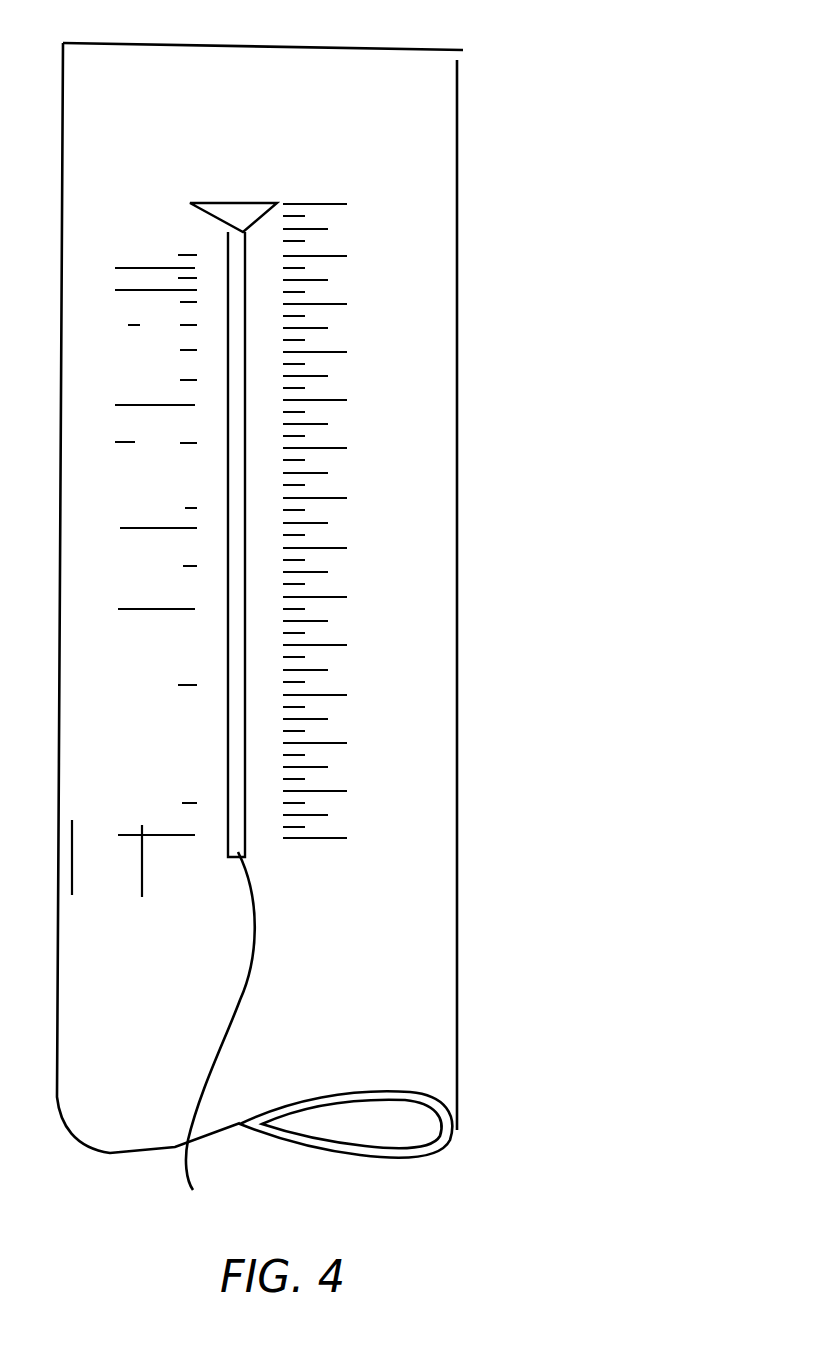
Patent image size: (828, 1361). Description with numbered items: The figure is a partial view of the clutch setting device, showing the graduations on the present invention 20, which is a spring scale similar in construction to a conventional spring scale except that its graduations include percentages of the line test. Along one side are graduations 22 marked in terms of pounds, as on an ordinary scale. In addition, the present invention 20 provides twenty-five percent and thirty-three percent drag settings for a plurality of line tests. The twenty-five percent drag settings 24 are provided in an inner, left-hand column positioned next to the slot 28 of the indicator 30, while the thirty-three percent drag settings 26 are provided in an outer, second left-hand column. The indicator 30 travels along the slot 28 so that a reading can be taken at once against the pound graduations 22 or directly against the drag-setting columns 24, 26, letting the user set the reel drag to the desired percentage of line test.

The present invention 20 is at (505, 403).
The graduations 22 is at (388, 205).
The 25% drag settings 24 is at (158, 216).
The 33% drag settings 26 is at (93, 246).
The slot 28 is at (300, 1047).
The indicator 30 is at (243, 212).